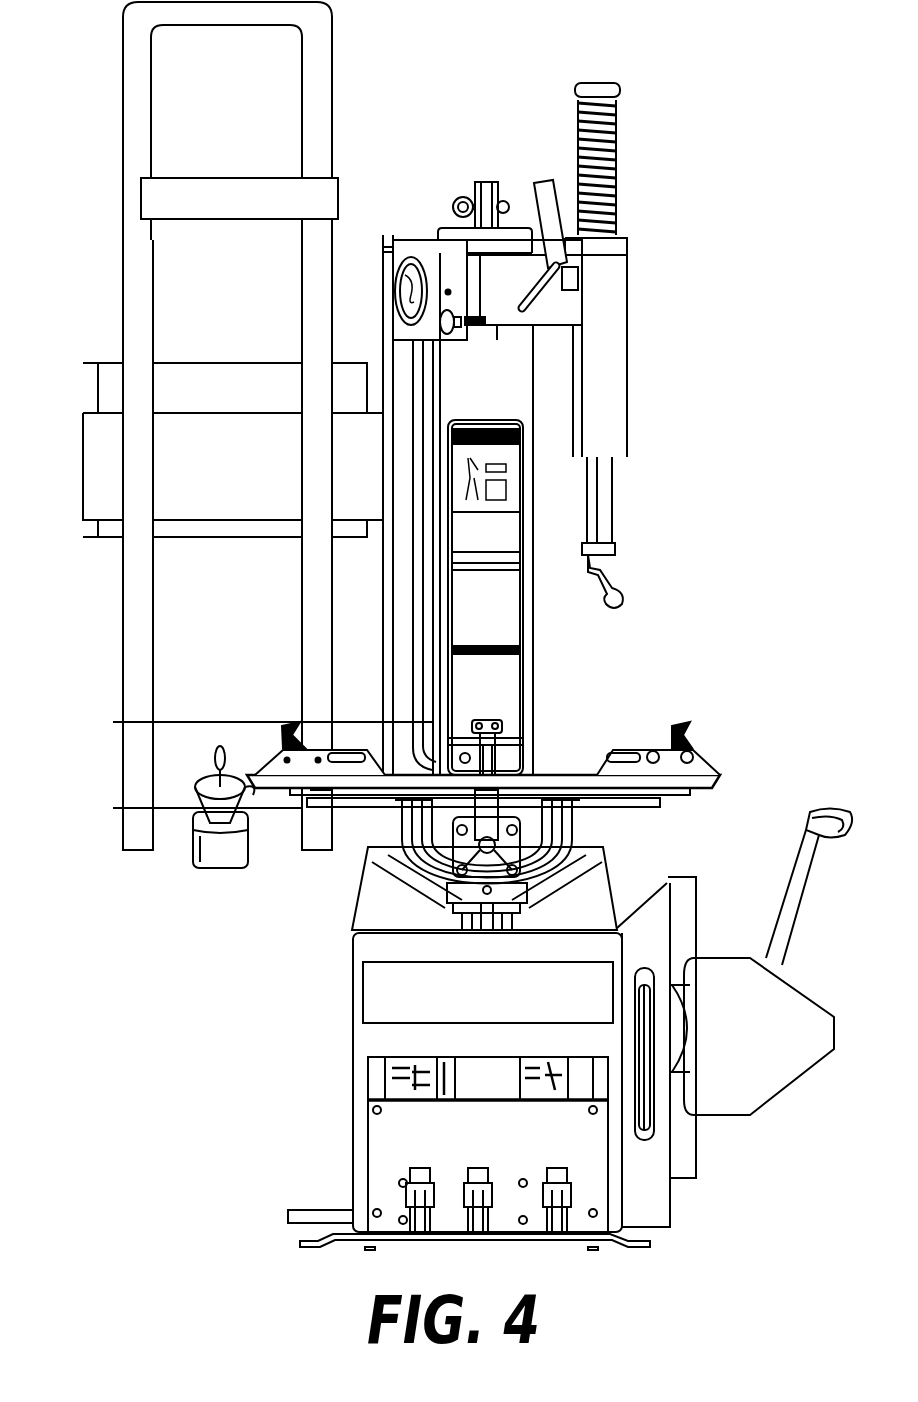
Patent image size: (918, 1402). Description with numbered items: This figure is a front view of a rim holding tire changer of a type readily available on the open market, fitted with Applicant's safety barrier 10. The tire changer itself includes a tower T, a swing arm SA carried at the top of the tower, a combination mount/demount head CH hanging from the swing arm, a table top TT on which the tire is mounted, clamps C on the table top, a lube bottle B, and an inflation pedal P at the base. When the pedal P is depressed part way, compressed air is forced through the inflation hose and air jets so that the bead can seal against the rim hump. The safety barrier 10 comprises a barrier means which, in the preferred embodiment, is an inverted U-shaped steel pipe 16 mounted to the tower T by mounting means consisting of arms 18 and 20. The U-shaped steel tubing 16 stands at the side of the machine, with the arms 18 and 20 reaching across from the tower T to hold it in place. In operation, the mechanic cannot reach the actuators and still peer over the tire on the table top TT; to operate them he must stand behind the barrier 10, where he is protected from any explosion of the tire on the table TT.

The safety barrier 10 is at (96, 590).
The inverted U-shaped steel pipe 16 is at (323, 57).
The arm 18 is at (197, 762).
The arm 20 is at (241, 479).
The lube bottle B is at (215, 858).
The swing arm SA is at (498, 313).
The tower T is at (518, 555).
The combination mount/demount head CH is at (633, 600).
The table top TT is at (543, 762).
The clamps C is at (683, 723).
The inflation pedal P is at (308, 1210).